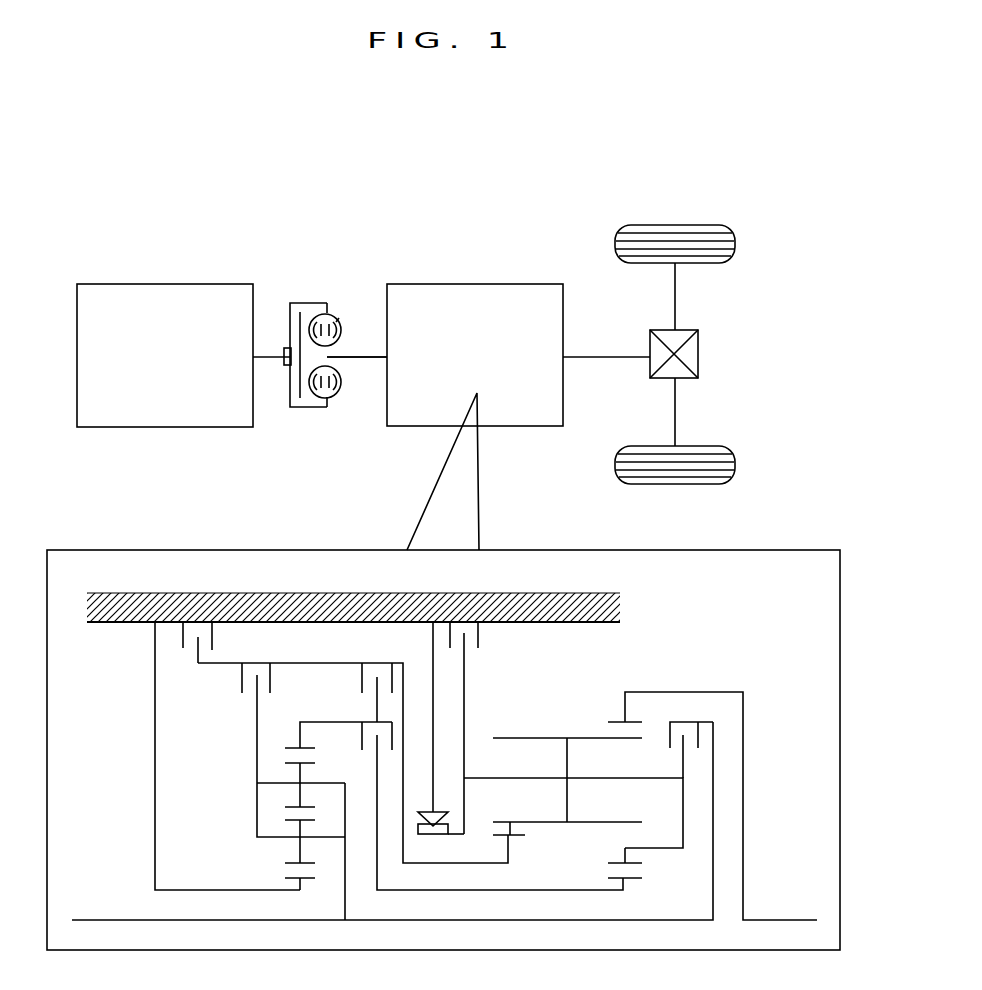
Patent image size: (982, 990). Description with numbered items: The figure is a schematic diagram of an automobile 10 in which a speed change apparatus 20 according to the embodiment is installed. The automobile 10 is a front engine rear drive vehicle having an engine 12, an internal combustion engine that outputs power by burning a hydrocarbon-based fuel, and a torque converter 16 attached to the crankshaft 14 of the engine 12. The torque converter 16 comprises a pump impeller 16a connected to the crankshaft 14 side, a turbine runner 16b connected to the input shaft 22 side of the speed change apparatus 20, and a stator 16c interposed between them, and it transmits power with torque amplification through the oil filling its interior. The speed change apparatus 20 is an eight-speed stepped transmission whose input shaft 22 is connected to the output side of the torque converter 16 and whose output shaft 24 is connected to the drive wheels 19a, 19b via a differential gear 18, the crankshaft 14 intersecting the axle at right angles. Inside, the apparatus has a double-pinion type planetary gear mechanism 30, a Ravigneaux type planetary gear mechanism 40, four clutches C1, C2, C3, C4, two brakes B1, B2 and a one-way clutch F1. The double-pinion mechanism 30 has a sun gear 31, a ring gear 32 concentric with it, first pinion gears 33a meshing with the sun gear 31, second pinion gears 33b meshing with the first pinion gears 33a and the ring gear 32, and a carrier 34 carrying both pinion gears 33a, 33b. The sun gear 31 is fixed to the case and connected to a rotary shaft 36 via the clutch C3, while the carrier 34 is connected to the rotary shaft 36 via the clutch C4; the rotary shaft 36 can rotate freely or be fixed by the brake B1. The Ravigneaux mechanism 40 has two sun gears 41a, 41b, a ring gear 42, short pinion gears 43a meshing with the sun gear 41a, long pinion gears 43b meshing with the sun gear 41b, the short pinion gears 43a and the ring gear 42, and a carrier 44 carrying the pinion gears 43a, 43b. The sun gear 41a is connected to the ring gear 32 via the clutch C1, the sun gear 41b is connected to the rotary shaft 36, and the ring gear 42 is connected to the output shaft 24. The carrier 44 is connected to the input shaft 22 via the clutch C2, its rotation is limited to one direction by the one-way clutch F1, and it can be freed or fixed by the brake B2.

The automobile 10 is at (443, 193).
The engine 12 is at (160, 283).
The crankshaft 14 is at (263, 355).
The torque converter 16 is at (303, 420).
The pump impeller 16a is at (337, 397).
The turbine runner 16b is at (312, 313).
The stator 16c is at (338, 318).
The differential gear 18 is at (650, 340).
The drive wheel 19a is at (680, 222).
The drive wheel 19b is at (672, 482).
The speed change apparatus 20 is at (478, 283).
The input shaft 22 is at (373, 355).
The output shaft 24 is at (580, 350).
The double-pinion type planetary gear mechanism 30 is at (240, 748).
The sun gear 31 is at (292, 887).
The ring gear 32 is at (310, 748).
The first pinion gears 33a is at (296, 852).
The second pinion gears 33b is at (298, 760).
The carrier 34 is at (257, 814).
The rotary shaft 36 is at (296, 662).
The Ravigneaux type planetary gear mechanism 40 is at (595, 677).
The sun gear 41a is at (632, 880).
The sun gear 41b is at (517, 838).
The ring gear 42 is at (620, 720).
The short pinion gears 43a is at (638, 863).
The long pinion gears 43b is at (582, 737).
The carrier 44 is at (683, 798).
The brake B1 is at (212, 641).
The brake B2 is at (478, 640).
The clutch C1 is at (372, 720).
The clutch C2 is at (678, 722).
The clutch C3 is at (370, 662).
The clutch C4 is at (240, 690).
The one-way clutch F1 is at (433, 835).